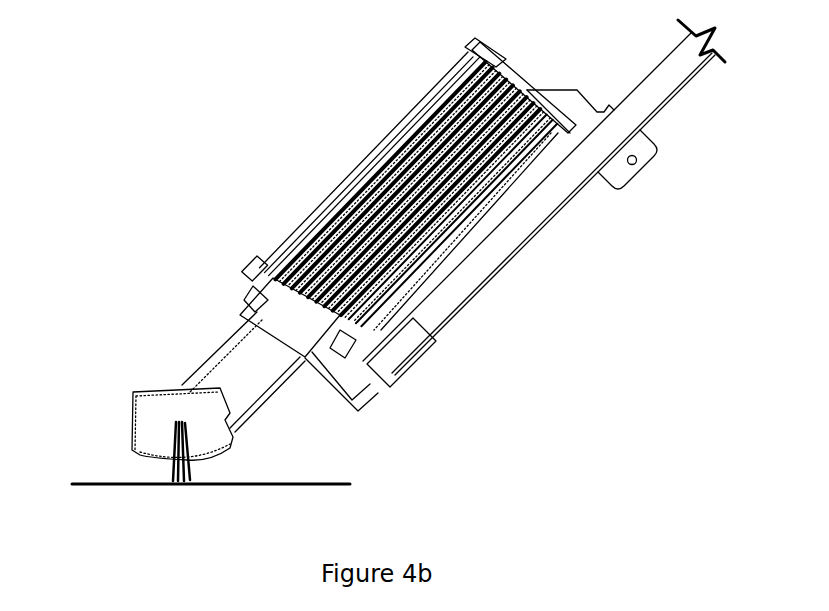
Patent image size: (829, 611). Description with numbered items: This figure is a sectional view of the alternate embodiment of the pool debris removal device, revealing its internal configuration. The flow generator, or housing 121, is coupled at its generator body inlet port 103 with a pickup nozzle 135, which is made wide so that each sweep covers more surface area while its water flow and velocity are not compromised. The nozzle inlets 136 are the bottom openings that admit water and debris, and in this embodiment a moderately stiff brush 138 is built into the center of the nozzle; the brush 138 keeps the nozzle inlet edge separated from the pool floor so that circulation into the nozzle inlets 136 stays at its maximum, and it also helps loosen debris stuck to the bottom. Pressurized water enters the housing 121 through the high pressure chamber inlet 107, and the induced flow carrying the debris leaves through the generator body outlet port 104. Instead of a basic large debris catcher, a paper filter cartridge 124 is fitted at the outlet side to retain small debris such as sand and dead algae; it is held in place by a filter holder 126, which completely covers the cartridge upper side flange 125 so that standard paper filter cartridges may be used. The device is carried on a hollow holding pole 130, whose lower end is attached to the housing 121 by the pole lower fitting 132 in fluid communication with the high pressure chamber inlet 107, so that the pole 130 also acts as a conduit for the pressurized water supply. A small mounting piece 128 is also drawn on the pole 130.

The generator body inlet port 103 is at (242, 370).
The generator body outlet port 104 is at (313, 313).
The high pressure chamber inlet 107 is at (358, 384).
The housing 121 is at (247, 300).
The paper filter cartridge 124 is at (380, 163).
The cartridge upper side flange 125 is at (490, 57).
The filter holder 126 is at (479, 42).
The mounting tab 128 is at (641, 146).
The holding pole 130 is at (555, 192).
The pole lower fitting 132 is at (427, 342).
The pickup nozzle 135 is at (133, 392).
The nozzle inlets 136 is at (203, 435).
The brush 138 is at (192, 469).